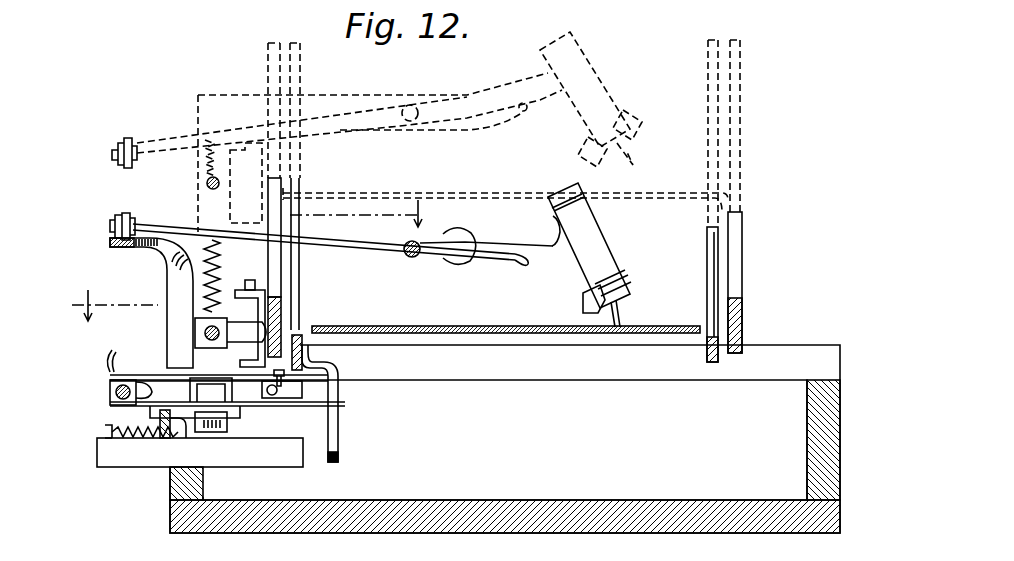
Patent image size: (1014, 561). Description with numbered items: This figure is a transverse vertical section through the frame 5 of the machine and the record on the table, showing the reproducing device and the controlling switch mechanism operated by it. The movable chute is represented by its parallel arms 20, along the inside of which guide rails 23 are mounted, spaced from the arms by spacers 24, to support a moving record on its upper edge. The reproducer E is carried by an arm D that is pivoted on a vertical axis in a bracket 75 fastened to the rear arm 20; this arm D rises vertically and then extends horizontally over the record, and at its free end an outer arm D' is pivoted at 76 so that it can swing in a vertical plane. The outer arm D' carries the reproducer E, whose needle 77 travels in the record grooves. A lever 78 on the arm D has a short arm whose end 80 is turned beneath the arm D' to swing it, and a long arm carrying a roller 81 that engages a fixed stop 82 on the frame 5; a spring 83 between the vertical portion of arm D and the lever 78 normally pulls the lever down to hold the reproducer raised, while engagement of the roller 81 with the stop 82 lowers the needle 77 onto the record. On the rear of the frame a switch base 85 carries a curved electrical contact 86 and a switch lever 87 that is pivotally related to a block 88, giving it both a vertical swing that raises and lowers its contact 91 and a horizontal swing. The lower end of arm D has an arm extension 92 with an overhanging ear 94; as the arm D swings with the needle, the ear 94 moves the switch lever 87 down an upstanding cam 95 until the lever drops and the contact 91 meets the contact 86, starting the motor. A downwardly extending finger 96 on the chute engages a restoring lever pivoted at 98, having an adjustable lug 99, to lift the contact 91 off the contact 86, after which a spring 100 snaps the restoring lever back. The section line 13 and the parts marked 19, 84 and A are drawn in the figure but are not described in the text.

The frame 5 is at (807, 438).
The section line 13- 13 is at (254, 260).
The pivot pin 19 is at (410, 257).
The arms 20 is at (296, 323).
The guide rails 23 is at (302, 292).
The spacers 24 is at (722, 318).
The bracket 75 is at (262, 283).
The pivot 76 is at (456, 236).
The needle 77 is at (620, 320).
The lever 78 is at (436, 265).
The end of lever 80 is at (527, 266).
The roller 81 is at (128, 222).
The fixed stop 82 is at (108, 242).
The spring 83 is at (222, 276).
The pivot block 84 is at (200, 334).
The switch base 85 is at (273, 463).
The electrical contact 86 is at (135, 413).
The switch lever 87 is at (278, 391).
The block 88 is at (195, 398).
The contact 91 is at (118, 392).
The arm extension 92 is at (160, 384).
The overhanging ear 94 is at (130, 376).
The cam 95 is at (186, 422).
The finger 96 is at (338, 430).
The pivot 98 is at (212, 432).
The adjustable lug 99 is at (302, 396).
The spring 100 is at (150, 433).
The plate A is at (508, 334).
The arm D is at (254, 266).
The outer arm D' is at (486, 222).
The reproducer E is at (592, 244).